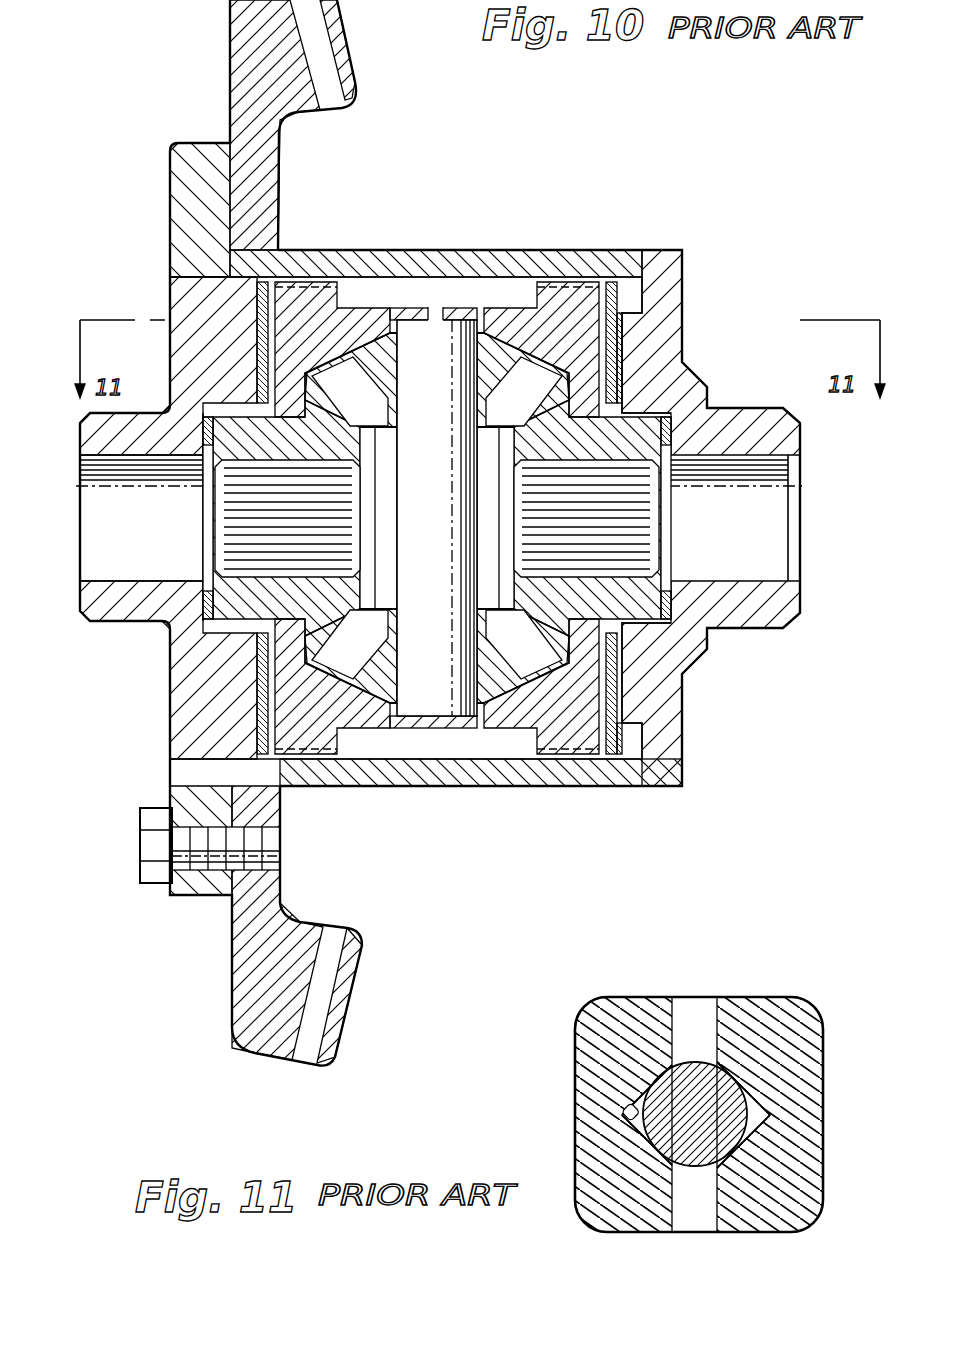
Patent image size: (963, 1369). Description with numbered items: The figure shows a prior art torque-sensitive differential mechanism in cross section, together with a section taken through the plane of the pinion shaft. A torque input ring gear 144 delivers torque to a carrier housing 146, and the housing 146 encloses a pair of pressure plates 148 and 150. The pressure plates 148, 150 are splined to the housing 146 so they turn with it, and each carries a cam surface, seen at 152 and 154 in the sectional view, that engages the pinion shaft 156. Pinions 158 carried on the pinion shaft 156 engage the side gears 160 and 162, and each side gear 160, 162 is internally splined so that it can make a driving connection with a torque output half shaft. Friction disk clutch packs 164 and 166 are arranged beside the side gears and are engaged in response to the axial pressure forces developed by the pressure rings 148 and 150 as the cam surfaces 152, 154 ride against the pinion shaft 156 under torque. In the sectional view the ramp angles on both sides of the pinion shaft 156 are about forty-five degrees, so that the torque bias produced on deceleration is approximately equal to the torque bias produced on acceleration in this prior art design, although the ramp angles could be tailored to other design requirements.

In FIG. 10, the torque input ring gear 144 is at (257, 157).
In FIG. 10, the carrier housing 146 is at (553, 258).
In FIG. 10, the pressure plate 148 is at (560, 330).
In FIG. 10, the pressure plate 150 is at (296, 330).
In FIG. 11, the cam surface 152 is at (748, 1127).
In FIG. 11, the cam surface 154 is at (627, 1111).
In FIG. 10, the pinion shaft 156 is at (420, 522).
In FIG. 11, the pinion shaft 156 is at (688, 1087).
In FIG. 10, the pinion 158 is at (497, 340).
In FIG. 10, the side gear 160 is at (550, 608).
In FIG. 10, the side gear 162 is at (335, 603).
In FIG. 10, the friction disk clutch pack 164 is at (625, 328).
In FIG. 10, the friction disk clutch pack 166 is at (263, 698).